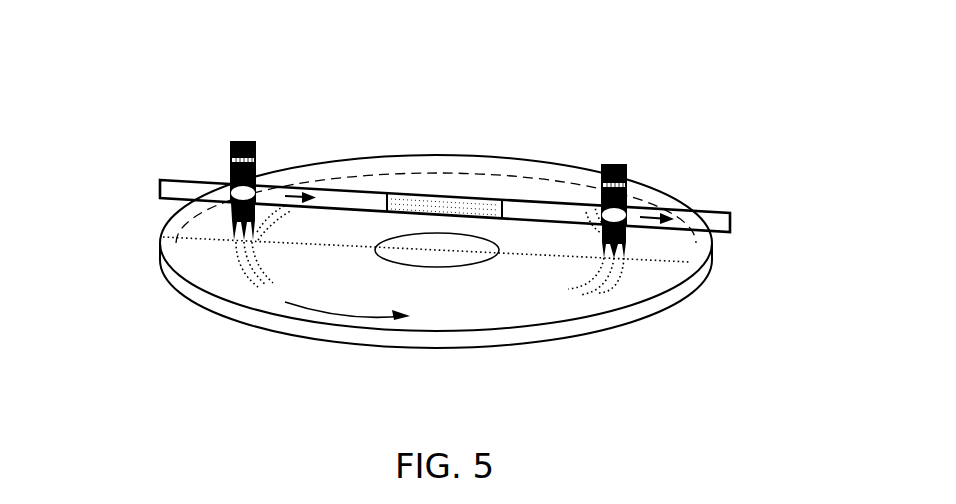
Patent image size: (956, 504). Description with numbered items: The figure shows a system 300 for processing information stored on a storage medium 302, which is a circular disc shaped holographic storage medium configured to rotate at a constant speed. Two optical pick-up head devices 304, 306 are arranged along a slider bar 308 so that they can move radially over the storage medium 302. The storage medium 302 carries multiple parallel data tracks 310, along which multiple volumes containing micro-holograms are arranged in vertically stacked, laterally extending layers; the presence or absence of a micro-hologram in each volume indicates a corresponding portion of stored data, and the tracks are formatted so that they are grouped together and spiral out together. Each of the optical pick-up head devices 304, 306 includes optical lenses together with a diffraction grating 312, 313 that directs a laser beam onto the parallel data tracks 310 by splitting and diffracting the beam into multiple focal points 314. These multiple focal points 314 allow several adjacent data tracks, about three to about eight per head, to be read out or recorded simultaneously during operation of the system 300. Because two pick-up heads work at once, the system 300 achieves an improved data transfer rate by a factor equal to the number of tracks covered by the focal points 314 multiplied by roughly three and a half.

The system 300 is at (705, 43).
The storage medium 302 is at (161, 270).
The optical pick-up head device 304 is at (217, 155).
The optical pick-up head device 306 is at (641, 172).
The slider bar 308 is at (160, 187).
The parallel data tracks 310 is at (602, 289).
The diffraction grating 312 is at (257, 160).
The diffraction grating 313 is at (601, 188).
The multiple focal points 314 is at (236, 237).